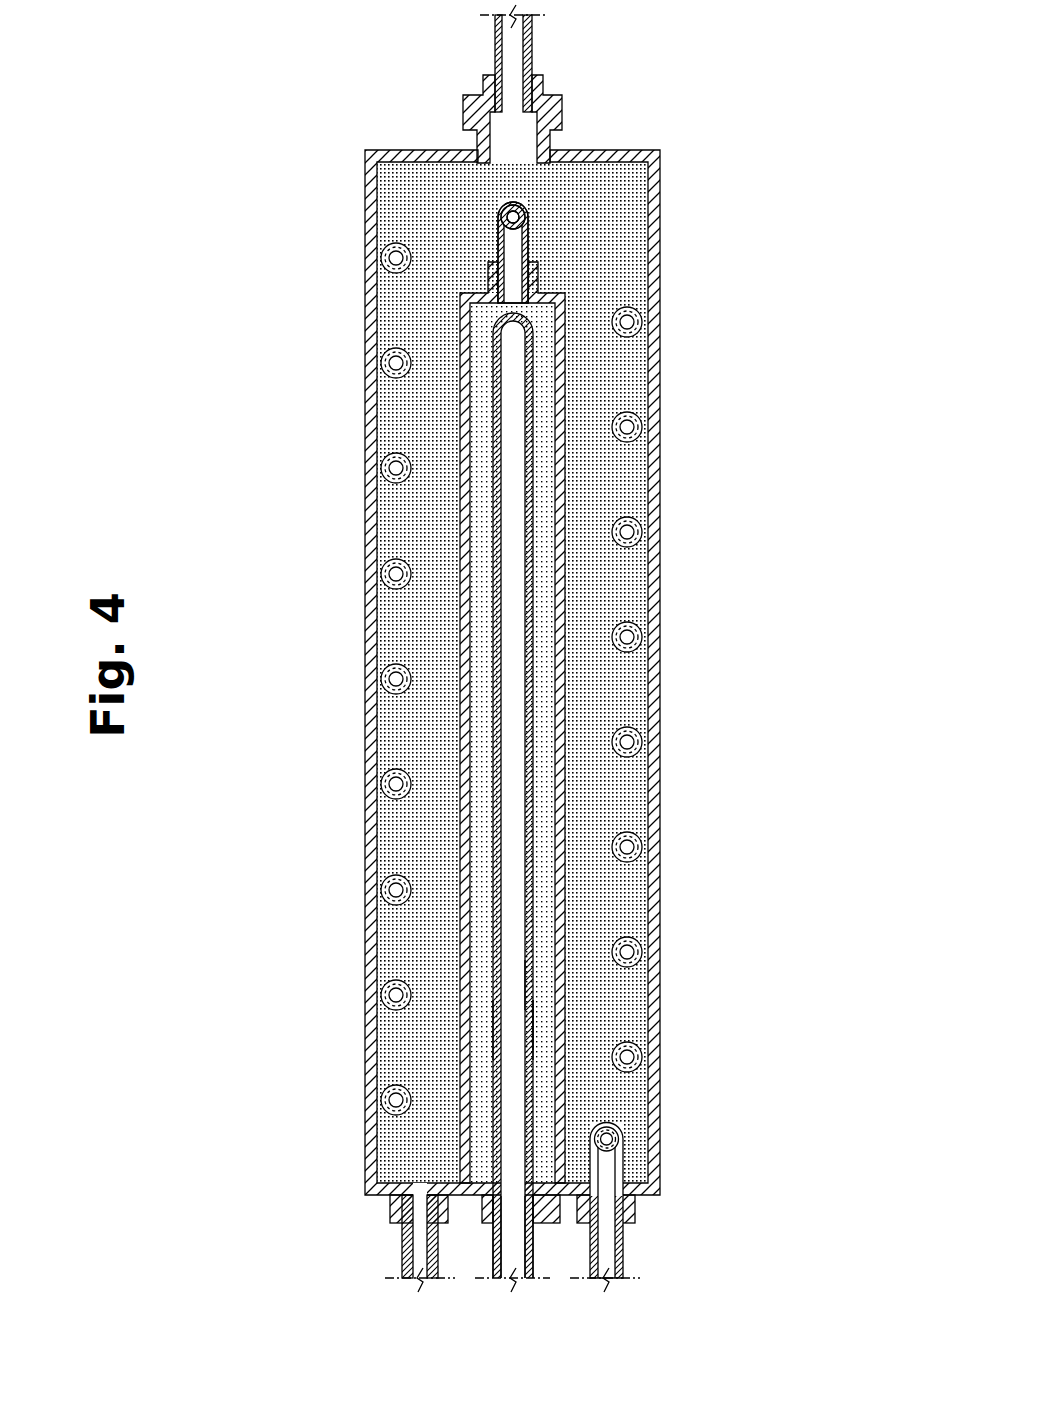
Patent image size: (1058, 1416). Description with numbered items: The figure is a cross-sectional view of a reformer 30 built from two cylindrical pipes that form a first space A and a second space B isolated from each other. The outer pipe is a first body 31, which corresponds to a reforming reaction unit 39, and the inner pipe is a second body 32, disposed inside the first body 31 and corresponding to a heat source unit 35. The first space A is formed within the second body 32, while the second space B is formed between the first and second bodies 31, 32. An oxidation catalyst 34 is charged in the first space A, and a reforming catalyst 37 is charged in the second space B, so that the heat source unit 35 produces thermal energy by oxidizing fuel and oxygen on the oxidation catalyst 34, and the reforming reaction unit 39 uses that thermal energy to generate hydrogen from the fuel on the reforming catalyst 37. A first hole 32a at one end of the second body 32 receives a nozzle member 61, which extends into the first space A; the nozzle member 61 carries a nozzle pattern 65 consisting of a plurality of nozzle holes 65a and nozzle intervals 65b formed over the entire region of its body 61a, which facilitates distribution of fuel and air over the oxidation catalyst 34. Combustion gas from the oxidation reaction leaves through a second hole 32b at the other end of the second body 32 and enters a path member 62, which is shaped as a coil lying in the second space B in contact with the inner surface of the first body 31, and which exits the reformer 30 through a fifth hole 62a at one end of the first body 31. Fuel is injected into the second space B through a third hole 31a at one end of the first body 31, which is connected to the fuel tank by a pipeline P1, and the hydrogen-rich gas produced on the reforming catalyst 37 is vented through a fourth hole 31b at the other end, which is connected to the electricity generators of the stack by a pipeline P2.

The reformer 30 is at (203, 656).
The first body 31 is at (366, 693).
The third hole 31a is at (389, 1205).
The fourth hole 31b is at (477, 140).
The second body 32 is at (558, 797).
The first hole 32a is at (543, 1213).
The second hole 32b is at (538, 277).
The oxidation catalyst 34 is at (552, 868).
The heat source unit 35 is at (545, 905).
The reforming catalyst 37 is at (378, 755).
The reforming reaction unit 39 is at (386, 837).
The nozzle member 61 is at (603, 831).
The body of the nozzle member 61a is at (492, 1258).
The path member 62 is at (487, 250).
The fifth hole 62a is at (633, 1212).
The nozzle pattern 65 is at (633, 1013).
The nozzle holes 65a is at (531, 977).
The nozzle intervals 65b is at (534, 1007).
The pipeline P1 is at (402, 1252).
The pipeline P2 is at (497, 52).
The first space A is at (545, 674).
The second space B is at (378, 522).